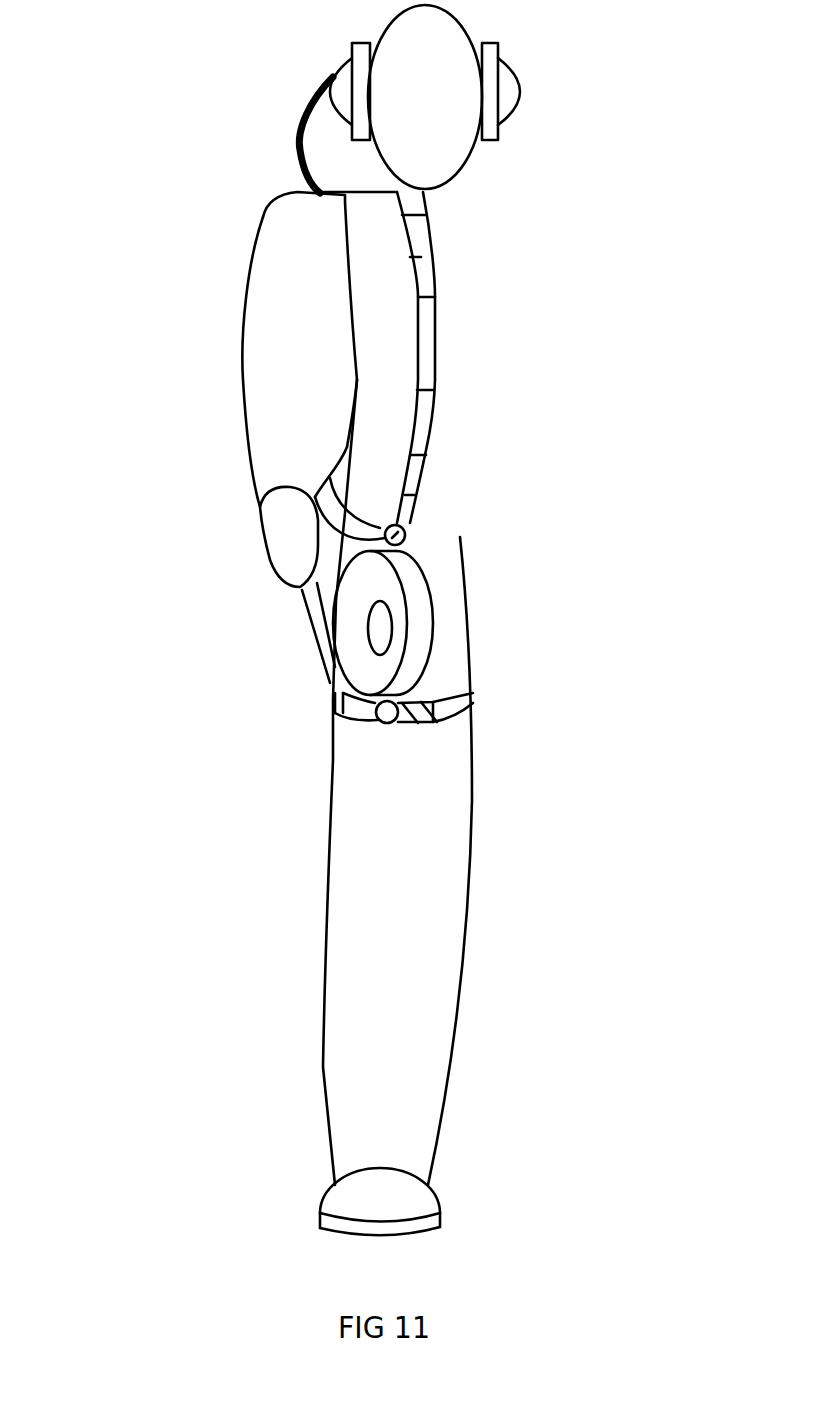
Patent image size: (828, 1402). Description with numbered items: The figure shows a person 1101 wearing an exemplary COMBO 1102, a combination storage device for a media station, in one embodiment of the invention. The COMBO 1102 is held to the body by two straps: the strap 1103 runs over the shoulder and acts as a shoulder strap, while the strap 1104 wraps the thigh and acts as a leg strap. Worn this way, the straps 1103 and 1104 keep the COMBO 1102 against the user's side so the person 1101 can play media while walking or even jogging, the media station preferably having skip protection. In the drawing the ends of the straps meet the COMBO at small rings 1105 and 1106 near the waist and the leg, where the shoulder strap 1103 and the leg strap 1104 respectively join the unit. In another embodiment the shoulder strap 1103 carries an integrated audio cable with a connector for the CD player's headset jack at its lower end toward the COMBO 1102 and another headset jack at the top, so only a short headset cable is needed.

The person 1101 is at (303, 375).
The COMBO 1102 is at (420, 602).
The strap 1103 is at (423, 230).
The strap 1104 is at (430, 703).
The attachment ring 1105 is at (396, 532).
The attachment ring 1106 is at (398, 714).